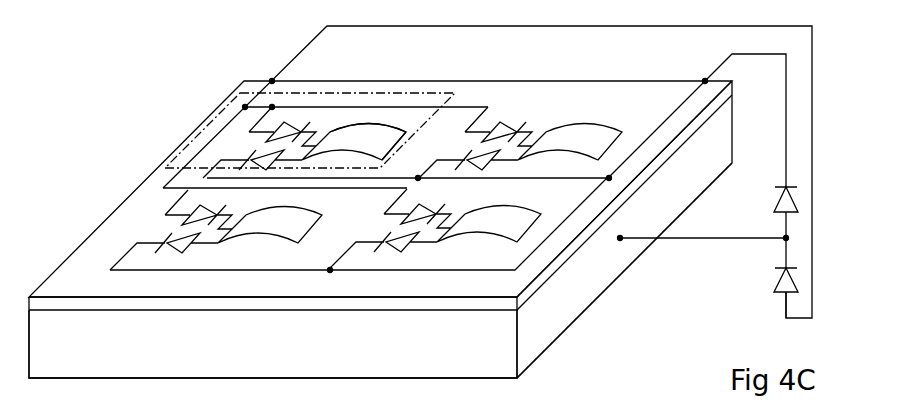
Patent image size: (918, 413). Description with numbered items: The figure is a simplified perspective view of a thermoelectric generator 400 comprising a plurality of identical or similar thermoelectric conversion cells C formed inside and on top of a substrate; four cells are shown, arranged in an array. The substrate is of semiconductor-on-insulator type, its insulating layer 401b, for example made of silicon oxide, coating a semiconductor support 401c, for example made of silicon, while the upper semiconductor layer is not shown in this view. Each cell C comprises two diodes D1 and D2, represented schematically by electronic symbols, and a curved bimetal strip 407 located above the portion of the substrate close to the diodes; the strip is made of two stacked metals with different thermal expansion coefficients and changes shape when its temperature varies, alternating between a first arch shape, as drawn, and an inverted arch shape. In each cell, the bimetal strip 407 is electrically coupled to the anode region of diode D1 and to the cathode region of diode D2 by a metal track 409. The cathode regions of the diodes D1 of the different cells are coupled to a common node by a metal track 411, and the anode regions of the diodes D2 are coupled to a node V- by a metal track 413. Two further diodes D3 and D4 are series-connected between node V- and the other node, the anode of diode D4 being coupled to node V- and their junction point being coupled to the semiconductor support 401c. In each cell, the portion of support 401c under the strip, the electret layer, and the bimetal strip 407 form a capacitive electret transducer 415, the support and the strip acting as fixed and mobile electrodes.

The thermoelectric generator 400 is at (238, 48).
The insulating layer 401b is at (545, 278).
The semiconductor support 401c is at (541, 330).
The bimetal strip 407 is at (391, 152).
The metal track 409 is at (304, 156).
The metal track 411 is at (671, 115).
The metal track 413 is at (270, 89).
The capacitive electret transducer 415 is at (387, 124).
The thermoelectric conversion cell C is at (443, 96).
The diode D1 is at (288, 165).
The diode D2 is at (266, 136).
The diode D3 is at (777, 204).
The diode D4 is at (777, 284).
The node V− V- is at (263, 71).